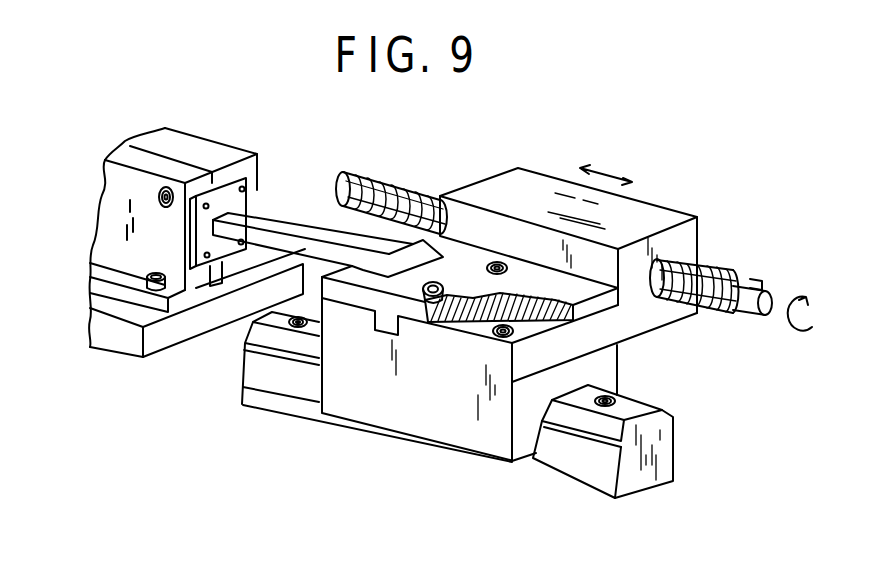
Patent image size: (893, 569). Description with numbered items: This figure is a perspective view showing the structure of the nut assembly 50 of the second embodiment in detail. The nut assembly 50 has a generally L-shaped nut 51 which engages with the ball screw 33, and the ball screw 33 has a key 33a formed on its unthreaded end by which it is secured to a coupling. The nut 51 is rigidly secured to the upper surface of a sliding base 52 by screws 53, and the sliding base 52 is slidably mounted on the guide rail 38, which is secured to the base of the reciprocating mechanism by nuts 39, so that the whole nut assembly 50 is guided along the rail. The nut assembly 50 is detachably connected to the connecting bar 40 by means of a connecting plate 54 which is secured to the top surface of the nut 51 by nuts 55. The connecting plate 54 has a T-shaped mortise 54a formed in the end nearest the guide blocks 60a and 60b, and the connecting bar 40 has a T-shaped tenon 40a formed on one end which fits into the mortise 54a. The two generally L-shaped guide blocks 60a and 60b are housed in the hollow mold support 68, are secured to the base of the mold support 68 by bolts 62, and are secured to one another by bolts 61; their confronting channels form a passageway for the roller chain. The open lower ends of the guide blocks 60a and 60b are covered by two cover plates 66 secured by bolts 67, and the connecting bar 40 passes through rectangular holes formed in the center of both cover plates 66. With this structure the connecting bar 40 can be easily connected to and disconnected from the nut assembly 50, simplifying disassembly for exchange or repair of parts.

The ball screw 33 is at (714, 275).
The key 33a is at (755, 282).
The guide rail 38 is at (570, 455).
The nuts 39 is at (620, 400).
The connecting bar 40 is at (300, 233).
The T-shaped tenon 40a is at (394, 192).
The nut assembly 50 is at (690, 205).
The nut 51 is at (532, 182).
The sliding base 52 is at (618, 366).
The screws 53 is at (503, 340).
The connecting plate 54 is at (593, 307).
The T-shaped mortise 54a is at (434, 240).
The nuts 55 is at (506, 270).
The guide block 60a is at (127, 157).
The guide block 60b is at (188, 142).
The bolts 61 is at (158, 197).
The bolts 62 is at (150, 276).
The cover plates 66 is at (217, 253).
The bolts 67 is at (247, 188).
The mold support 68 is at (173, 333).